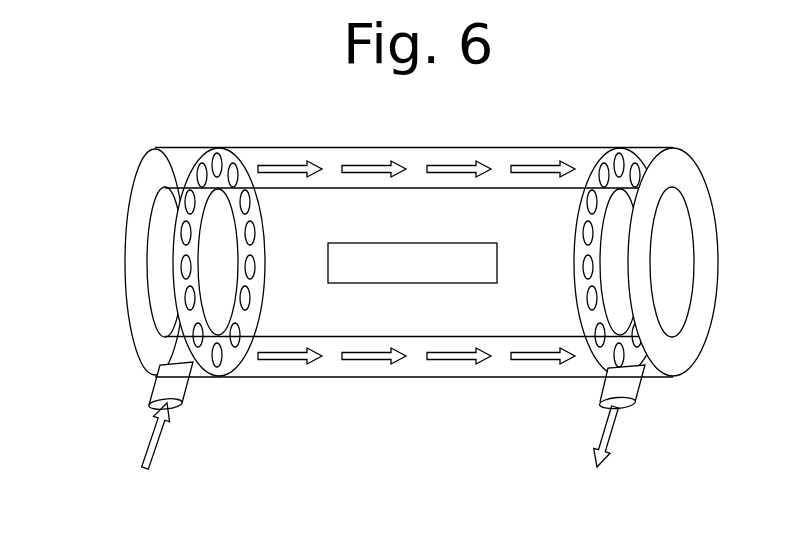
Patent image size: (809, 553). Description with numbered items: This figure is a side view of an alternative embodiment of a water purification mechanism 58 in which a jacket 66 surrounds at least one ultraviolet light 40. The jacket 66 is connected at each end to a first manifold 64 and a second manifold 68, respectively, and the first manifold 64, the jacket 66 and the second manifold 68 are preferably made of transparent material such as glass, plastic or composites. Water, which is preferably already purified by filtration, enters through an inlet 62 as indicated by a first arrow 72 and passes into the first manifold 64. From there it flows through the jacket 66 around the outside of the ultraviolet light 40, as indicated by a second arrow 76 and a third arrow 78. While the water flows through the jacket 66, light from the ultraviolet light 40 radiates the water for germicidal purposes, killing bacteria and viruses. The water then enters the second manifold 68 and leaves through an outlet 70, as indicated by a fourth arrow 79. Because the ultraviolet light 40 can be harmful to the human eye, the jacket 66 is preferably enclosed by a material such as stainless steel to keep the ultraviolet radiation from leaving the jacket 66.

The water purification mechanism 58 is at (415, 271).
The first manifold 64 is at (122, 247).
The inlet 62 is at (158, 376).
The jacket 66 is at (397, 148).
The second manifold 68 is at (717, 262).
The outlet 70 is at (645, 380).
The first arrow 72 is at (145, 438).
The second arrow 76 is at (275, 165).
The third arrow 78 is at (275, 360).
The fourth arrow 79 is at (620, 432).
The ultraviolet light 40 is at (427, 277).